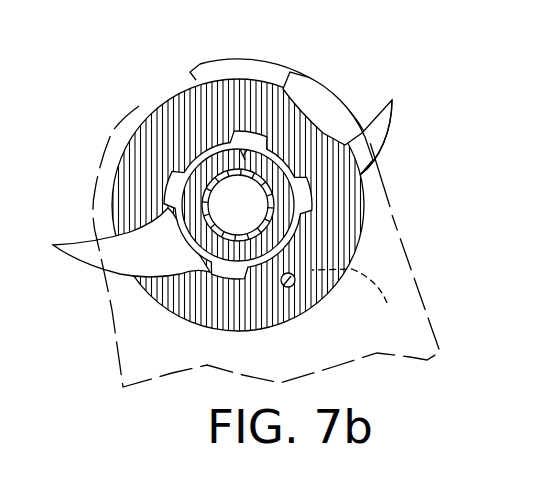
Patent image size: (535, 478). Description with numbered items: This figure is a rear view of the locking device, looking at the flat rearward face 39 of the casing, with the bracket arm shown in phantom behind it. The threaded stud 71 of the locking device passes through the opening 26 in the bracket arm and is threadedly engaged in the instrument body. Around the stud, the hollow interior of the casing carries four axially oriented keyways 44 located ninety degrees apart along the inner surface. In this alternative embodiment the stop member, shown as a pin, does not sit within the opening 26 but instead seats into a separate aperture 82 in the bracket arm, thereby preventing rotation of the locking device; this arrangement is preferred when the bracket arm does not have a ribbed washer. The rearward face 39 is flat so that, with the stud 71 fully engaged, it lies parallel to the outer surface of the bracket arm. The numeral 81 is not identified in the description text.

The opening 26 is at (141, 116).
The rearward face 39 is at (297, 92).
The keyways 44 is at (399, 94).
The threaded stud 71 is at (275, 165).
The hole 81 is at (299, 311).
The aperture 82 is at (359, 298).